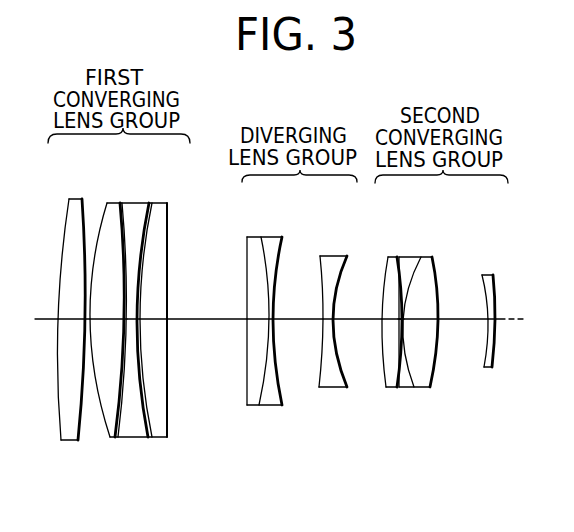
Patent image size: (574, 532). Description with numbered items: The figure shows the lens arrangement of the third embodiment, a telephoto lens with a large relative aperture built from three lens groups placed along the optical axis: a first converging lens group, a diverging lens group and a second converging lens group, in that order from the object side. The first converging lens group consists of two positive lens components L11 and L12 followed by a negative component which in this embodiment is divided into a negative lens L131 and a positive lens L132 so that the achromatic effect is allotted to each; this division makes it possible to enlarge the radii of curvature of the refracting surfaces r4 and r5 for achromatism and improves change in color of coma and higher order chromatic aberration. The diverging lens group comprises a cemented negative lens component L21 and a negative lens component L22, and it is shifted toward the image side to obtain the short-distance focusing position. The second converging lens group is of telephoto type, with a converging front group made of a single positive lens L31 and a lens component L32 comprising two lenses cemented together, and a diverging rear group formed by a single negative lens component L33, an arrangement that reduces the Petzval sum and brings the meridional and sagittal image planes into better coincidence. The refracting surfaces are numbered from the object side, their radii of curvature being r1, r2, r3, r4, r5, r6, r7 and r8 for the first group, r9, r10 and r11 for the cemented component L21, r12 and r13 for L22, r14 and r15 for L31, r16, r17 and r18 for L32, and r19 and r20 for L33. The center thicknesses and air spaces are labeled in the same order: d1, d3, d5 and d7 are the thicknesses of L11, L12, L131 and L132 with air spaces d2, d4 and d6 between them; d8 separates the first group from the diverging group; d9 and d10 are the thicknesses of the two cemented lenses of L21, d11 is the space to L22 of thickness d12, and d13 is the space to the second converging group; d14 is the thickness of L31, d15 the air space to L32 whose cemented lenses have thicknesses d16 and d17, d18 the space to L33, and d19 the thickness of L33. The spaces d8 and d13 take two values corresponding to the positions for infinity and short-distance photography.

The positive lens component L11 is at (77, 198).
The positive lens component L12 is at (113, 203).
The negative lens L131 is at (137, 203).
The positive lens L132 is at (160, 203).
The cemented negative lens component L21 is at (265, 237).
The negative lens component L22 is at (335, 256).
The single positive lens L31 is at (391, 257).
The lens component comprising two cemented lenses L32 is at (416, 257).
The single negative lens component L33 is at (486, 275).
The radius of curvature of first refracting surface r1 is at (63, 440).
The radius of curvature of second refracting surface r2 is at (78, 441).
The radius of curvature of third refracting surface r3 is at (107, 438).
The radius of curvature of fourth refracting surface r4 is at (114, 438).
The radius of curvature of fifth refracting surface r5 is at (122, 438).
The radius of curvature of sixth refracting surface r6 is at (146, 438).
The radius of curvature of seventh refracting surface r7 is at (153, 438).
The radius of curvature of eighth refracting surface r8 is at (167, 438).
The radius of curvature of ninth refracting surface r9 is at (247, 405).
The radius of curvature of tenth refracting surface r10 is at (258, 405).
The radius of curvature of eleventh refracting surface r11 is at (282, 405).
The radius of curvature of twelfth refracting surface r12 is at (319, 387).
The radius of curvature of thirteenth refracting surface r13 is at (347, 388).
The radius of curvature of fourteenth refracting surface r14 is at (386, 387).
The radius of curvature of fifteenth refracting surface r15 is at (392, 388).
The radius of curvature of sixteenth refracting surface r16 is at (399, 388).
The radius of curvature of seventeenth refracting surface r17 is at (414, 388).
The radius of curvature of eighteenth refracting surface r18 is at (431, 387).
The radius of curvature of nineteenth refracting surface r19 is at (483, 367).
The radius of curvature of twentieth refracting surface r20 is at (492, 367).
The center thickness d1 is at (76, 303).
The air space d2 is at (85, 318).
The center thickness d3 is at (107, 311).
The air space d4 is at (124, 318).
The center thickness d5 is at (137, 318).
The air space d6 is at (136, 320).
The center thickness d7 is at (153, 311).
The air space d8 is at (226, 319).
The center thickness d9 is at (253, 320).
The center thickness d10 is at (272, 322).
The air space d11 is at (277, 320).
The center thickness d12 is at (325, 320).
The air space d13 is at (337, 320).
The center thickness d14 is at (383, 318).
The air space d15 is at (400, 322).
The center thickness d16 is at (404, 320).
The center thickness d17 is at (422, 311).
The air space d18 is at (477, 320).
The center thickness d19 is at (494, 318).